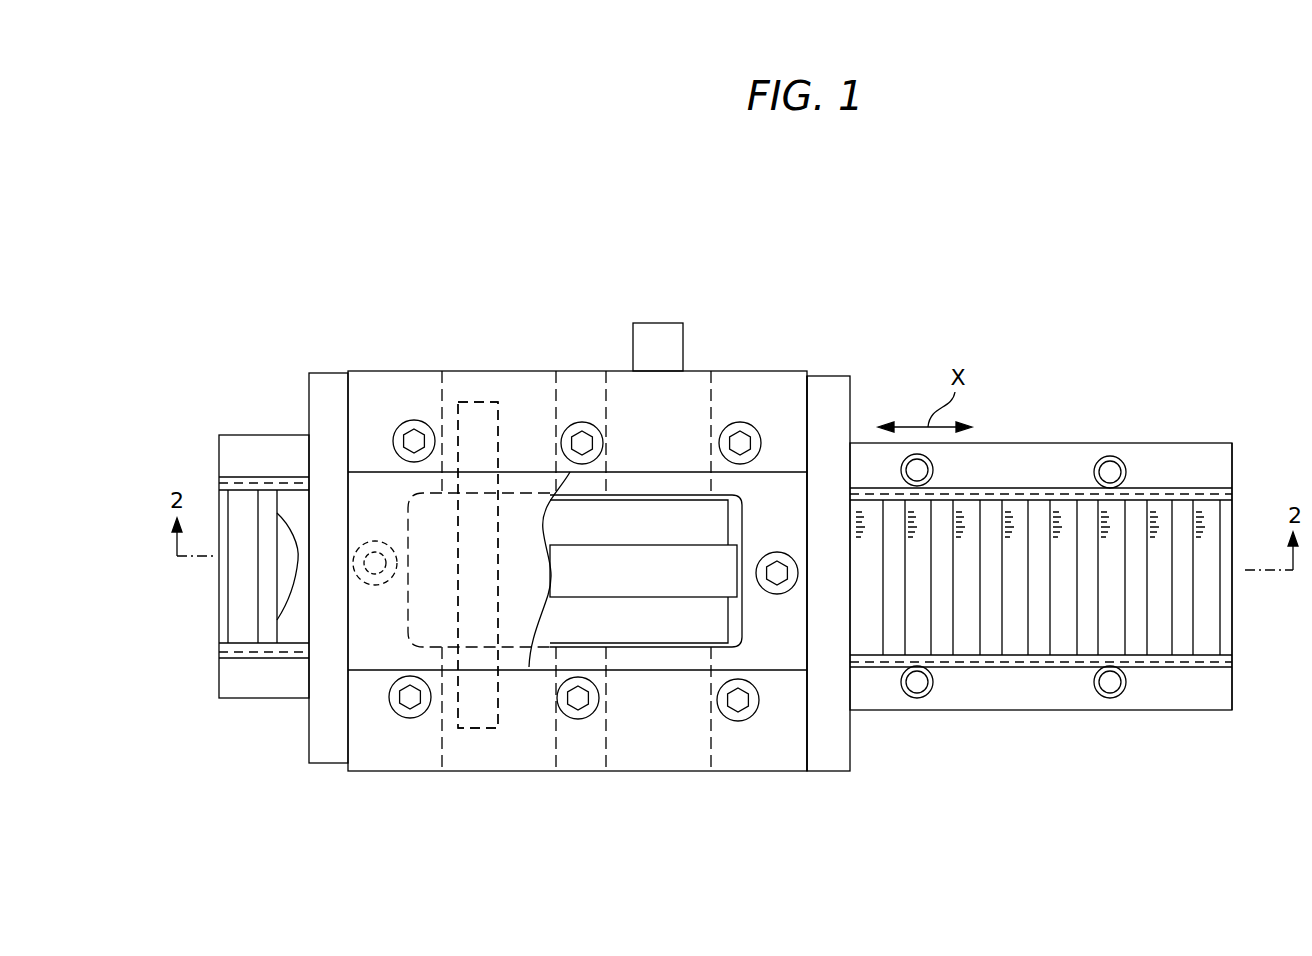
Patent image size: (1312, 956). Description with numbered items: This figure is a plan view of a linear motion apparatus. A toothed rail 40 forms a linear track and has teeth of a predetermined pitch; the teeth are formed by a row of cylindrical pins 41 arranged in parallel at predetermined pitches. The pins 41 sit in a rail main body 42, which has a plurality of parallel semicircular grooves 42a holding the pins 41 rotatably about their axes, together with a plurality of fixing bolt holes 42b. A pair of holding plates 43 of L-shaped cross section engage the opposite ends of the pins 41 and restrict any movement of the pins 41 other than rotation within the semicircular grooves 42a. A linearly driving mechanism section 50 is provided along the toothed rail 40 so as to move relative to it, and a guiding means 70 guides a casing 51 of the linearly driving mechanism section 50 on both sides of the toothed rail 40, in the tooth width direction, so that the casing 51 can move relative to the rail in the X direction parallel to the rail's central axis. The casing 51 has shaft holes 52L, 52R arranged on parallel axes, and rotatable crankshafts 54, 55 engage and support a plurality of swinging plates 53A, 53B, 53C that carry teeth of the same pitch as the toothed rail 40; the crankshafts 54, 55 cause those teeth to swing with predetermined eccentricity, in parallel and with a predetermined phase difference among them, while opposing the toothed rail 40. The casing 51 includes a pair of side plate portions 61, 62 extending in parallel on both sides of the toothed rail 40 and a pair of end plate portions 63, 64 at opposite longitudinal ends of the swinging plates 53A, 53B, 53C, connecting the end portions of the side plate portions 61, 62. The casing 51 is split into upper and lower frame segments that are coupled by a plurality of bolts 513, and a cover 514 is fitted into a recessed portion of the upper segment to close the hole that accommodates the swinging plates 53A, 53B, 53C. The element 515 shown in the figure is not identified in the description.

The toothed rail 40 is at (1168, 422).
The cylindrical pins 41 is at (1215, 620).
The rail main body 42 is at (1238, 522).
The semicircular grooves 42a is at (287, 548).
The fixing bolt holes 42b is at (1108, 456).
The holding plates 43 is at (1030, 490).
The linearly driving mechanism section 50 is at (824, 348).
The casing 51 is at (872, 391).
The shaft hole 52L is at (445, 395).
The shaft hole 52R is at (708, 392).
The swinging plate 53A is at (683, 630).
The swinging plate 53B is at (576, 570).
The swinging plate 53C is at (650, 510).
The crankshaft 54 is at (660, 328).
The crankshaft 55 is at (473, 402).
The side plate portion 61 is at (625, 770).
The side plate portion 62 is at (617, 395).
The end plate portion 63 is at (375, 655).
The end plate portion 64 is at (773, 645).
The guiding means 70 is at (825, 757).
The bolts 513 is at (404, 422).
The cover 514 is at (487, 630).
The bolt hole 515 is at (369, 543).